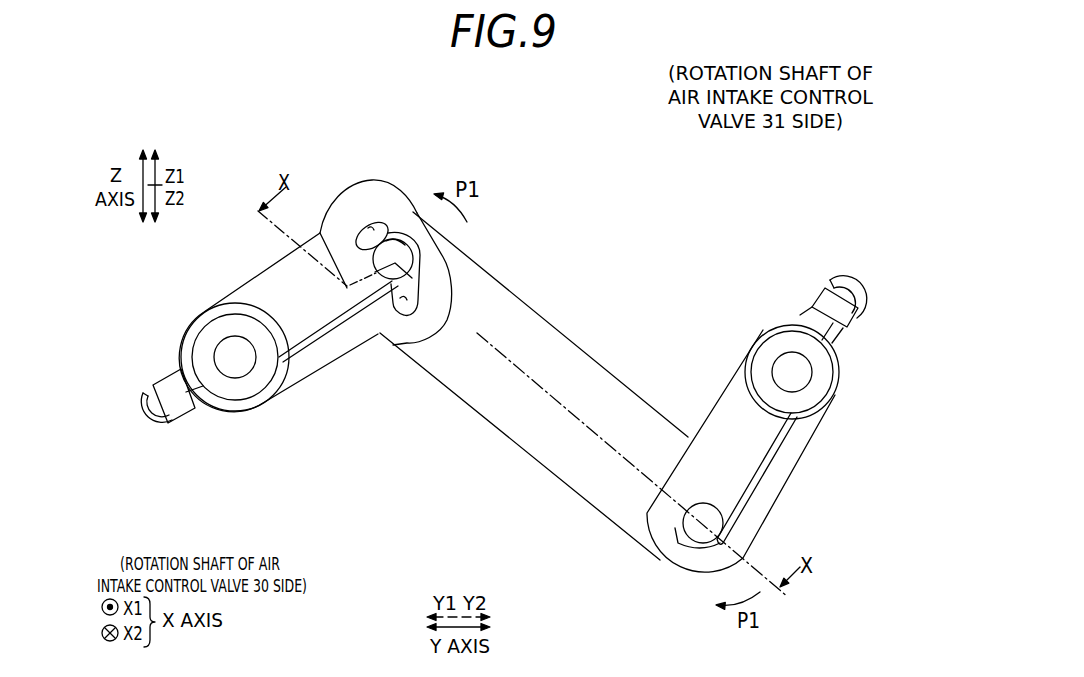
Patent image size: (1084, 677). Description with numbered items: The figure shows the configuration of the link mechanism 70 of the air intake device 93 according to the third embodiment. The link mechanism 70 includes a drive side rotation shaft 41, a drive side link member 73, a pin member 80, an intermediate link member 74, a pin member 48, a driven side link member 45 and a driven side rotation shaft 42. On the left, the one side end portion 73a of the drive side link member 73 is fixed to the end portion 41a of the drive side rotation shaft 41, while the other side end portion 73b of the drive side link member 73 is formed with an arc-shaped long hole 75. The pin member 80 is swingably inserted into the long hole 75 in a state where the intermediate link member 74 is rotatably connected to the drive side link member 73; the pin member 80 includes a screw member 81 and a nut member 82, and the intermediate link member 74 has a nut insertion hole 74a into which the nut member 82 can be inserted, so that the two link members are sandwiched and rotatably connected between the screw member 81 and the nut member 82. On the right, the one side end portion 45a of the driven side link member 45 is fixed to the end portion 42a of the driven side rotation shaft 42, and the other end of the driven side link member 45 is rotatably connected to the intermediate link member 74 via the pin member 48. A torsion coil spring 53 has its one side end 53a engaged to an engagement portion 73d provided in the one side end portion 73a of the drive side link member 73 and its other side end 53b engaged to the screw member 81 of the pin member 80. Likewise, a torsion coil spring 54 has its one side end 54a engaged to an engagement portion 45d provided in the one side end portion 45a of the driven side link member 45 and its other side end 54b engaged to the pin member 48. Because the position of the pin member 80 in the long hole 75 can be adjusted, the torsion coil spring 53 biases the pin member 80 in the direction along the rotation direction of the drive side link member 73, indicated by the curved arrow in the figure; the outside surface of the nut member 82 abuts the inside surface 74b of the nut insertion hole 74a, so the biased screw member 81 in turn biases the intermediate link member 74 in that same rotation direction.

The link mechanism 70 is at (506, 364).
The air intake device 93 is at (600, 164).
The drive side link member 73 is at (253, 290).
The one side end portion of the drive side link member 73a is at (182, 360).
The other side end portion of the drive side link member 73b is at (370, 193).
The engagement portion 73d is at (157, 387).
The drive side rotation shaft 41 is at (222, 444).
The end portion of the drive side rotation shaft 41a is at (235, 357).
The torsion coil spring 53 is at (355, 322).
The one side end of the torsion coil spring 53a is at (141, 396).
The other side end of the torsion coil spring 53b is at (400, 256).
The intermediate link member 74 is at (573, 367).
The nut insertion hole 74a is at (362, 416).
The inside surface of the nut insertion hole 74b is at (397, 287).
The long hole 75 is at (378, 235).
The screw member 81 is at (433, 208).
The pin member 80 is at (392, 240).
The nut member 82 is at (357, 243).
The driven side link member 45 is at (837, 397).
The one side end portion of the driven side link member 45a is at (788, 330).
The engagement portion 45d is at (857, 317).
The driven side rotation shaft 42 is at (770, 262).
The end portion of the driven side rotation shaft 42a is at (792, 370).
The pin member 48 is at (705, 537).
The torsion coil spring 54 is at (773, 460).
The one side end of the torsion coil spring 54a is at (847, 282).
The other side end of the torsion coil spring 54b is at (688, 543).